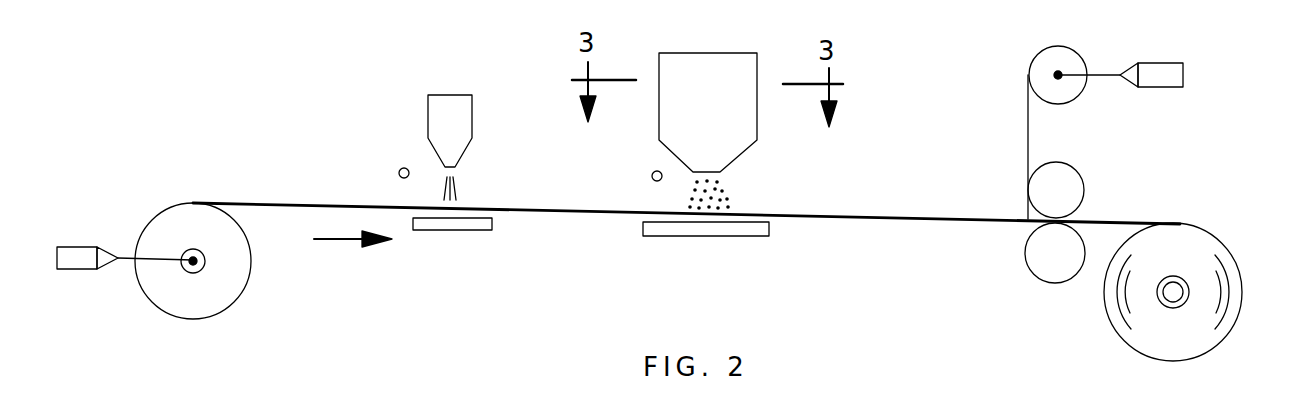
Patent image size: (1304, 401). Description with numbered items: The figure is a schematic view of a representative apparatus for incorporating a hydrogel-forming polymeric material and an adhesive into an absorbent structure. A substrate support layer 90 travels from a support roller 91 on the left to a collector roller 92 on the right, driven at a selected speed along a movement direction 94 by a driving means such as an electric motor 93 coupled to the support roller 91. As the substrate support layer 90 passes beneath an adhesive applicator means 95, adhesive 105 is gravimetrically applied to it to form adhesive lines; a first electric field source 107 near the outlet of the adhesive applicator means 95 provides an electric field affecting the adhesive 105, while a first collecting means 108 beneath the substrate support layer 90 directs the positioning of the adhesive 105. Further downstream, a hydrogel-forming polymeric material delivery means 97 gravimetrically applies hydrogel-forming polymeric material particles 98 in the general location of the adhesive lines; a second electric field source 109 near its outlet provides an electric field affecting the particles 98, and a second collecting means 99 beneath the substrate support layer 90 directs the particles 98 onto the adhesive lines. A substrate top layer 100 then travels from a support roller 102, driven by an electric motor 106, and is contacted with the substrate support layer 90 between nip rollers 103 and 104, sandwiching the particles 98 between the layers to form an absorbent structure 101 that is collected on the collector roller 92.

The substrate support layer 90 is at (304, 205).
The support roller 91 is at (225, 290).
The collector roller 92 is at (1185, 305).
The electric motor 93 is at (75, 272).
The movement direction 94 is at (337, 242).
The adhesive applicator means 95 is at (466, 118).
The hydrogel-forming polymeric material delivery means 97 is at (670, 118).
The hydrogel-forming polymeric material particles 98 is at (752, 183).
The second collecting means 99 is at (712, 237).
The substrate top layer 100 is at (1028, 132).
The absorbent structure 101 is at (1150, 222).
The support roller 102 is at (1062, 103).
The nip roller 103 is at (1068, 185).
The nip roller 104 is at (1038, 255).
The adhesive 105 is at (455, 193).
The electric motor 106 is at (1170, 87).
The first electric field source 107 is at (400, 169).
The first collecting means 108 is at (450, 232).
The second electric field source 109 is at (653, 172).